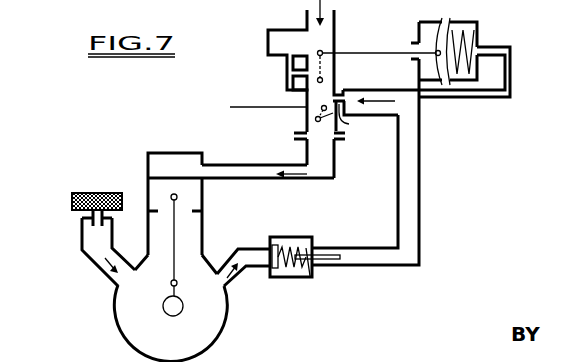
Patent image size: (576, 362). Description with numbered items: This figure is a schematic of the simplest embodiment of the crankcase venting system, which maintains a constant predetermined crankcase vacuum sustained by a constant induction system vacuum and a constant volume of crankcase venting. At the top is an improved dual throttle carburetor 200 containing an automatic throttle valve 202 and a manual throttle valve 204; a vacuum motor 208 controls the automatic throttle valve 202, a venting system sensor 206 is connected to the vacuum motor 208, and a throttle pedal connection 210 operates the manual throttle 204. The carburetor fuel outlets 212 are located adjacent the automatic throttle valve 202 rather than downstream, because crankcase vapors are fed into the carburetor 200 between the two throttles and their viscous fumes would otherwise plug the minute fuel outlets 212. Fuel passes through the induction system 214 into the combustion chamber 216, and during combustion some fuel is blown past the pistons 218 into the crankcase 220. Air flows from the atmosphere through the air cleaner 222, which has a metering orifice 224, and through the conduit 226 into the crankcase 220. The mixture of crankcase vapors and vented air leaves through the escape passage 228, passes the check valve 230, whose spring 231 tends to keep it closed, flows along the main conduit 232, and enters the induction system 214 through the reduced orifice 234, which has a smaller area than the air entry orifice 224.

The dual throttle carburetor 200 is at (272, 62).
The automatic throttle valve 202 is at (322, 79).
The manual throttle valve 204 is at (316, 118).
The venting system sensor 206 is at (512, 83).
The vacuum motor 208 is at (486, 26).
The throttle pedal connection 210 is at (247, 107).
The carburetor fuel outlets 212 is at (291, 88).
The induction system 214 is at (247, 170).
The combustion chamber 216 is at (156, 165).
The pistons 218 is at (190, 200).
The crankcase 220 is at (203, 332).
The air cleaner 222 is at (72, 203).
The metering orifice 224 is at (97, 222).
The conduit 226 is at (105, 273).
The escape passage 228 is at (249, 257).
The check valve 230 is at (289, 235).
The spring 231 is at (304, 270).
The main conduit 232 is at (407, 213).
The reduced orifice 234 is at (365, 119).